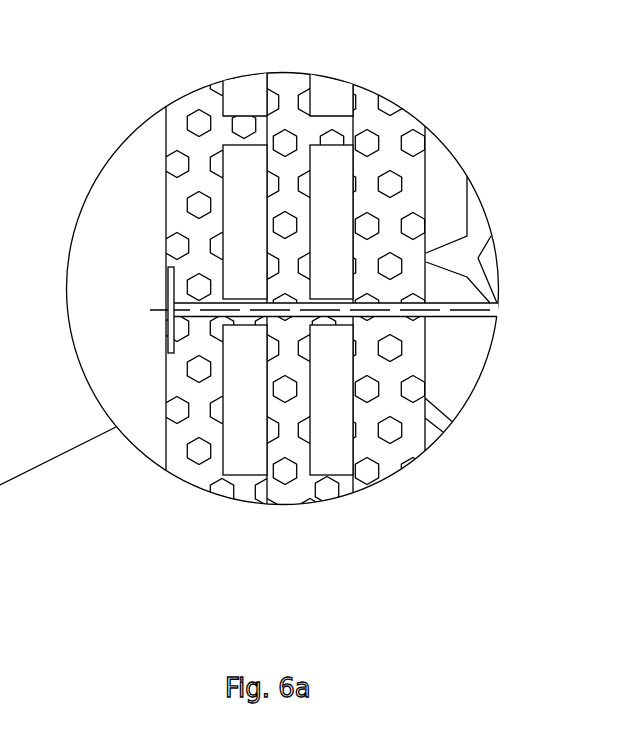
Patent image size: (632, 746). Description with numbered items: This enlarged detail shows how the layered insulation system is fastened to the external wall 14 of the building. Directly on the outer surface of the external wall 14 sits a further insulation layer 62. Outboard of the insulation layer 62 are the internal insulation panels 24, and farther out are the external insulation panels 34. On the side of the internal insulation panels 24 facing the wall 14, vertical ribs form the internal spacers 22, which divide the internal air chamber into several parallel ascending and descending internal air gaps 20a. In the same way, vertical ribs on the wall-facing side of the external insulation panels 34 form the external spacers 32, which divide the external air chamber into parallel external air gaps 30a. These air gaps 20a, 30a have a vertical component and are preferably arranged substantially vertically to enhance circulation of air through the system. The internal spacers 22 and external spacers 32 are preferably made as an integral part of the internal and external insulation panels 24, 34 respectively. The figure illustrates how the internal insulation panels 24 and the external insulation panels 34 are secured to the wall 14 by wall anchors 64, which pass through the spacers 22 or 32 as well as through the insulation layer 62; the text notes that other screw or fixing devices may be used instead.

The external wall 14 is at (447, 370).
The internal air gaps 20a is at (342, 165).
The internal spacers 22 is at (323, 117).
The internal insulation panels 24 is at (288, 490).
The external air gaps 30a is at (235, 167).
The external spacers 32 is at (243, 117).
The external insulation panels 34 is at (187, 472).
The insulation layer 62 is at (380, 453).
The wall anchors 64 is at (167, 329).